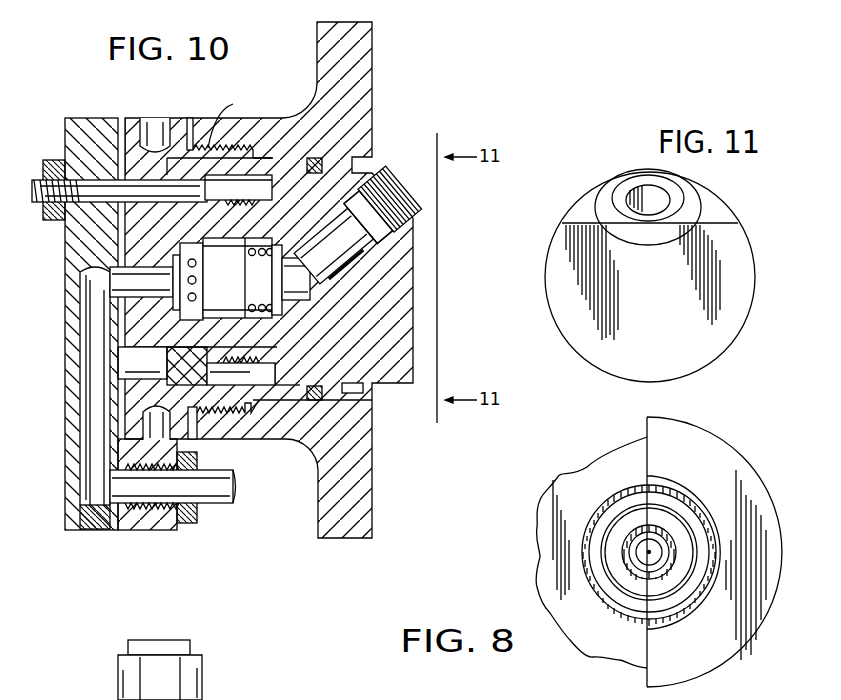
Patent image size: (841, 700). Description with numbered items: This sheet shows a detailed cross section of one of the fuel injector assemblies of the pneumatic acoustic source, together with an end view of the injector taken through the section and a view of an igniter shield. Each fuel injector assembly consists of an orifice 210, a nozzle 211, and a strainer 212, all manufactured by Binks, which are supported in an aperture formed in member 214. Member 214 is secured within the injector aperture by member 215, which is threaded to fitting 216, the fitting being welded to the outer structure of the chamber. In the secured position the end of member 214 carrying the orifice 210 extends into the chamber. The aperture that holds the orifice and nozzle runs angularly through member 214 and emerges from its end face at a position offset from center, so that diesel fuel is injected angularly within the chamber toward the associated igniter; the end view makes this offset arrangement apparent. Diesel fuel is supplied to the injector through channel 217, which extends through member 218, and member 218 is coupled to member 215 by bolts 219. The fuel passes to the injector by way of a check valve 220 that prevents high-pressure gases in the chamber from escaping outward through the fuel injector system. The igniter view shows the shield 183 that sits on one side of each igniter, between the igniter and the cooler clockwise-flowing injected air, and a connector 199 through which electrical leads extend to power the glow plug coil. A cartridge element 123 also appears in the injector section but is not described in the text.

In FIG. 10, the valve cartridge 123 is at (328, 232).
In FIG. 8, the shield 183 is at (728, 658).
In FIG. 10, the connector 199 is at (202, 673).
In FIG. 10, the orifice 210 is at (380, 195).
In FIG. 11, the orifice 210 is at (643, 190).
In FIG. 10, the nozzle 211 is at (370, 222).
In FIG. 10, the strainer 212 is at (327, 258).
In FIG. 10, the member 214 is at (359, 346).
In FIG. 11, the member 214 is at (663, 300).
In FIG. 10, the member 215 is at (234, 120).
In FIG. 10, the fitting 216 is at (263, 441).
In FIG. 10, the channel 217 is at (97, 438).
In FIG. 10, the member 218 is at (65, 127).
In FIG. 10, the bolts 219 is at (38, 203).
In FIG. 10, the check valve 220 is at (148, 266).